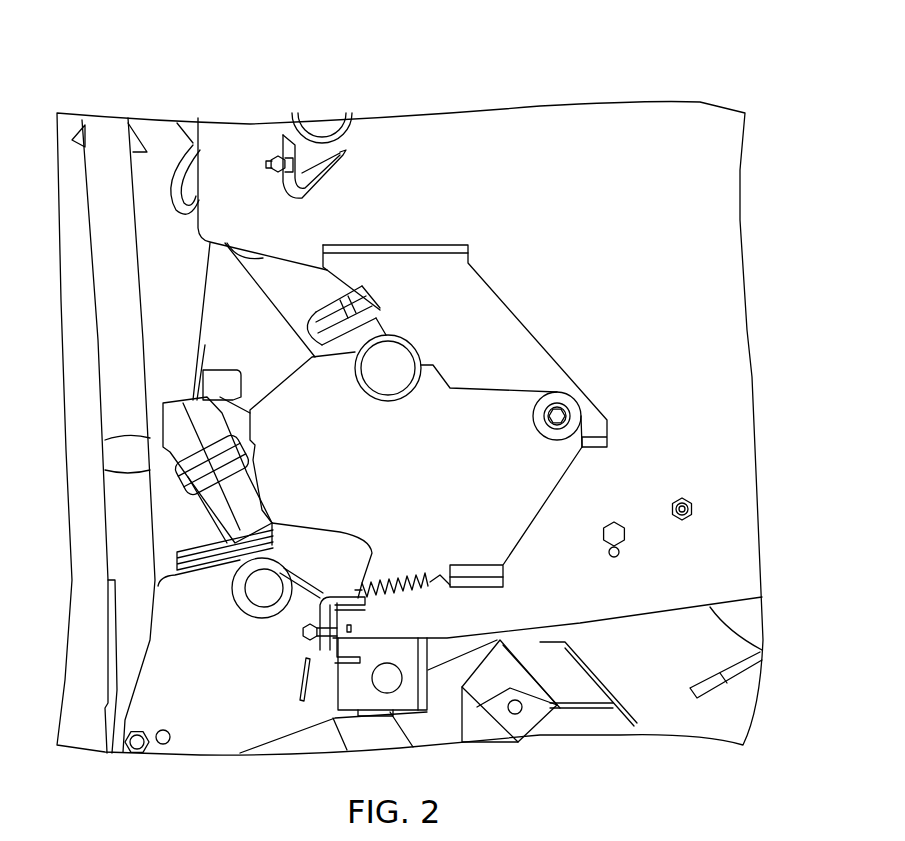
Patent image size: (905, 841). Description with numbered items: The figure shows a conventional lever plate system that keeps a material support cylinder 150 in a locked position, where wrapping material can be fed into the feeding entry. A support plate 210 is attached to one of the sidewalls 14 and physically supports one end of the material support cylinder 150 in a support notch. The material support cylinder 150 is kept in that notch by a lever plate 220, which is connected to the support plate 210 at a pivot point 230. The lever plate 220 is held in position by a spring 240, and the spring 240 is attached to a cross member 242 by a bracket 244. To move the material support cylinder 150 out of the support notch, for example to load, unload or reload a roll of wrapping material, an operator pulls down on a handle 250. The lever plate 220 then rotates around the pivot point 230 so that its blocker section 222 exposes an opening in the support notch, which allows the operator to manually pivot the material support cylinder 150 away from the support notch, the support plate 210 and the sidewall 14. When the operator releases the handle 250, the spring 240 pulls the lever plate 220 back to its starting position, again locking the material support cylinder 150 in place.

The sidewall 14 is at (514, 130).
The material support cylinder 150 is at (303, 277).
The support plate 210 is at (540, 372).
The lever plate 220 is at (515, 510).
The blocker section 222 is at (313, 412).
The pivot point 230 is at (548, 422).
The spring 240 is at (383, 582).
The cross member 242 is at (303, 600).
The bracket 244 is at (323, 590).
The handle 250 is at (213, 470).